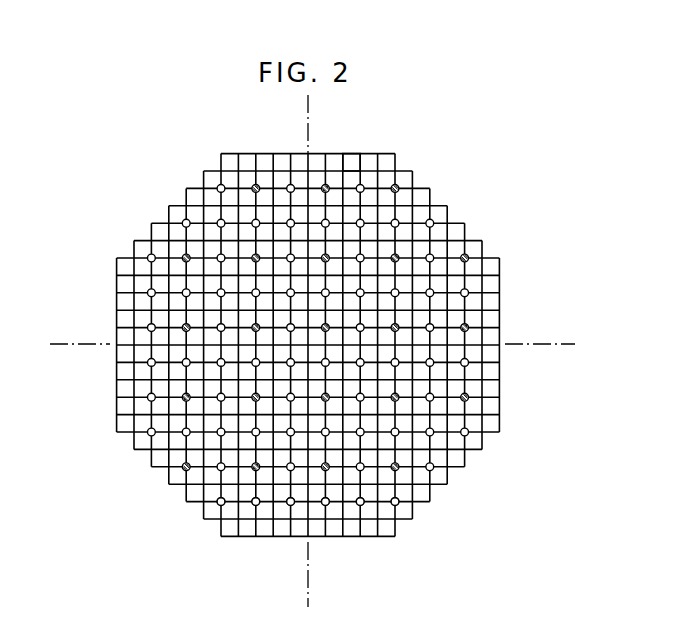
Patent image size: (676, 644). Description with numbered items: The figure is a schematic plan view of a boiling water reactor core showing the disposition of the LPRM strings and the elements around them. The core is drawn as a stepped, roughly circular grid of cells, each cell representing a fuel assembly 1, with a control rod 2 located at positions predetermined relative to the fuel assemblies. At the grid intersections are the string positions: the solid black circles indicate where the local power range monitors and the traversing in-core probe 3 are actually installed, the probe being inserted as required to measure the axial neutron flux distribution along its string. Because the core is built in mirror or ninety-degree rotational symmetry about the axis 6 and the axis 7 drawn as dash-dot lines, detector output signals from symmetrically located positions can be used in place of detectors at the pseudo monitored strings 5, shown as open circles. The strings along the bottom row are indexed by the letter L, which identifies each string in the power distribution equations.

The fuel assembly 1 is at (420, 198).
The control rod 2 is at (350, 167).
The traversing in-core probe 3 is at (467, 254).
The pseudo monitored string 5 is at (469, 291).
The axis of symmetry 6 is at (311, 134).
The axis of symmetry 7 is at (518, 343).